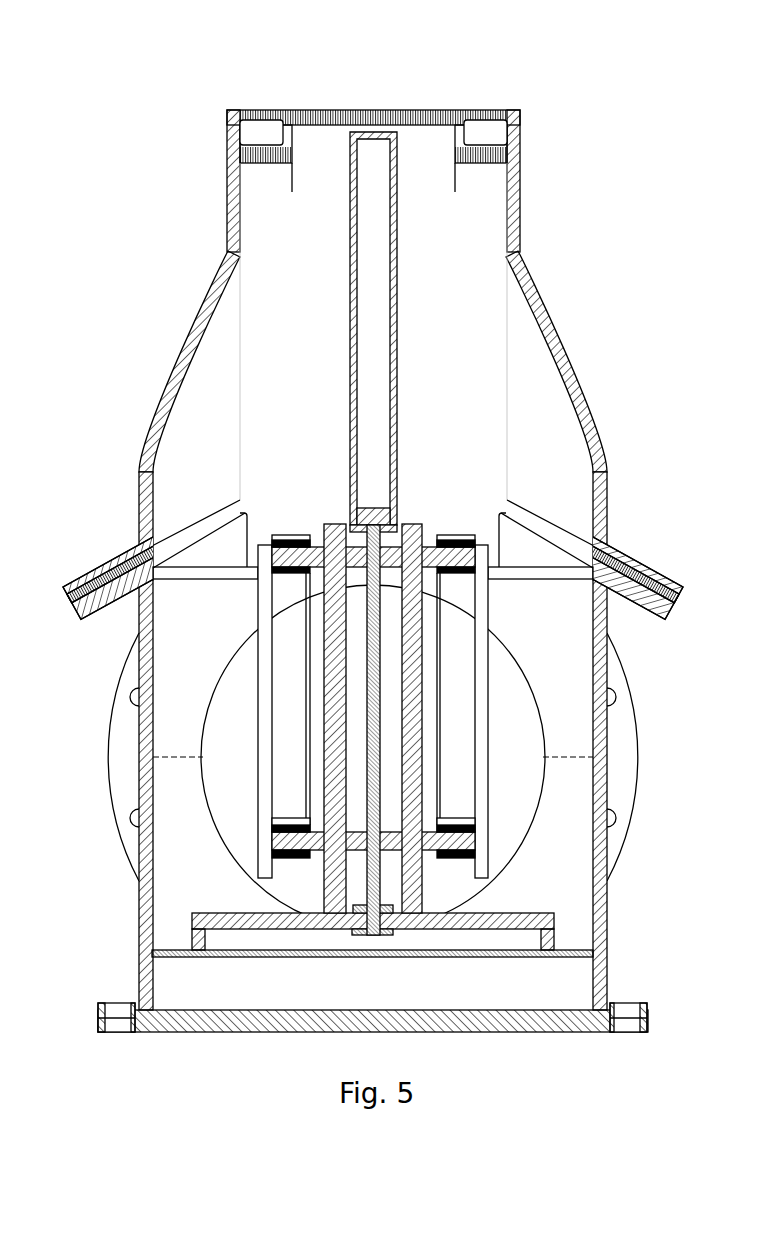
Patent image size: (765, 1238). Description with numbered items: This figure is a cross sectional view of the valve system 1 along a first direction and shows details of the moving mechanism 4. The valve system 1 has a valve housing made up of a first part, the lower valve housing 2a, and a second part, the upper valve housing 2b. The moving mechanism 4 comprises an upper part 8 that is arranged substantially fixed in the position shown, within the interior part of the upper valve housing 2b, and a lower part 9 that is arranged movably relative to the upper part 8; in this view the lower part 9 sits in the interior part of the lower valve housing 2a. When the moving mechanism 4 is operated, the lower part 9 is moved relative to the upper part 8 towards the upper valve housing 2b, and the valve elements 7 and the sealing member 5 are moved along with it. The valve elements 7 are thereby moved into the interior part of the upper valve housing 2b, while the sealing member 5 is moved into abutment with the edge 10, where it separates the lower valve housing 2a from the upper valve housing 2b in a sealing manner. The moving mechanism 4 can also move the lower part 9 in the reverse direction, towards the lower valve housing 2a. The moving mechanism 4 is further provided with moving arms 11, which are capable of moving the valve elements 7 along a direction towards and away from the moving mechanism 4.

The valve system 1 is at (630, 112).
The lower valve housing 2a is at (600, 912).
The upper valve housing 2b is at (595, 452).
The moving mechanism 4 is at (398, 371).
The sealing member 5 is at (412, 952).
The valve elements 7 is at (230, 818).
The upper part 8 is at (348, 260).
The lower part 9 is at (285, 735).
The edge 10 is at (153, 569).
The moving arms 11 is at (272, 546).